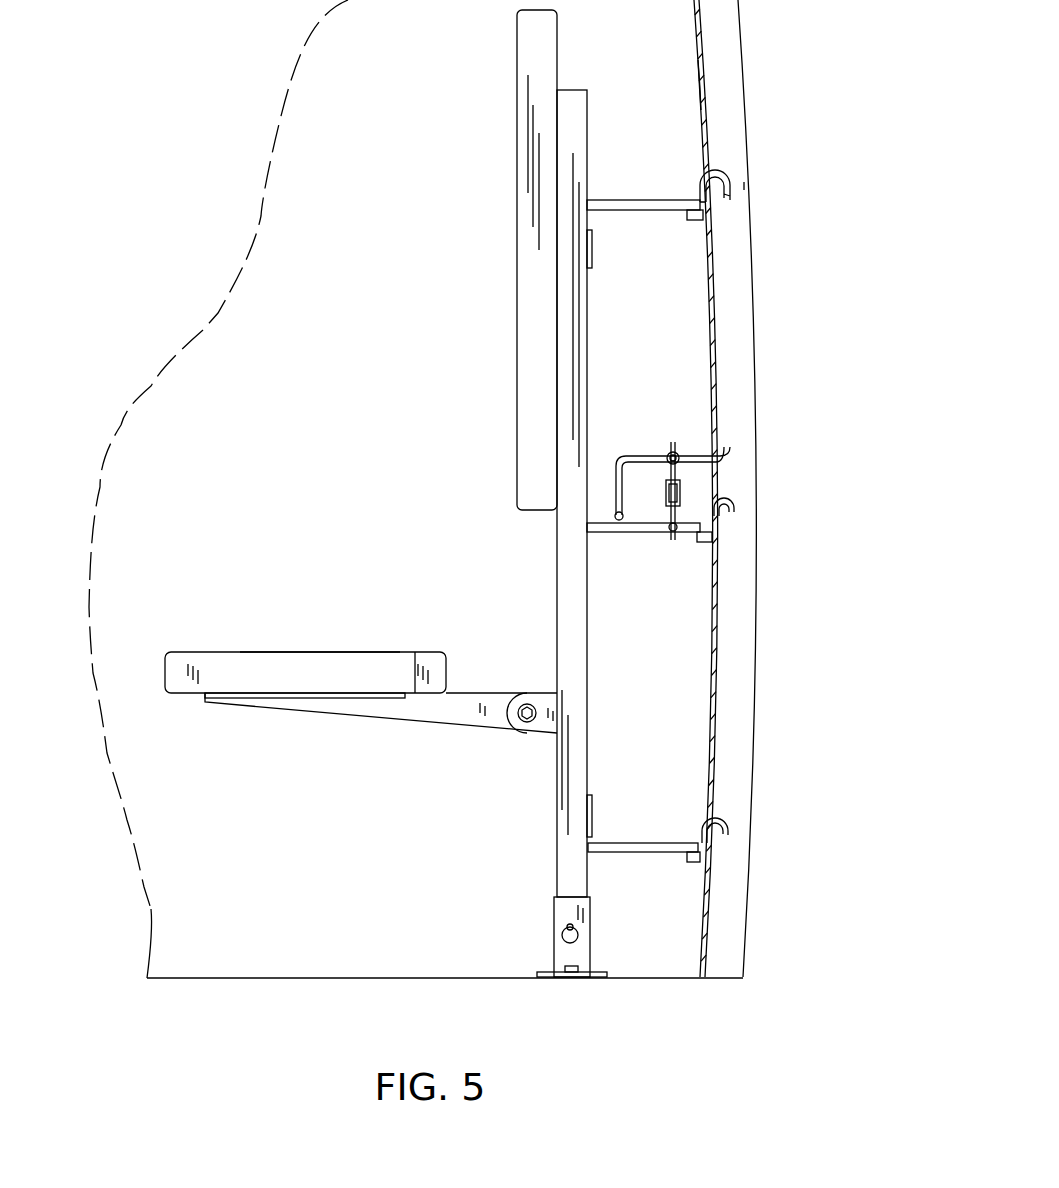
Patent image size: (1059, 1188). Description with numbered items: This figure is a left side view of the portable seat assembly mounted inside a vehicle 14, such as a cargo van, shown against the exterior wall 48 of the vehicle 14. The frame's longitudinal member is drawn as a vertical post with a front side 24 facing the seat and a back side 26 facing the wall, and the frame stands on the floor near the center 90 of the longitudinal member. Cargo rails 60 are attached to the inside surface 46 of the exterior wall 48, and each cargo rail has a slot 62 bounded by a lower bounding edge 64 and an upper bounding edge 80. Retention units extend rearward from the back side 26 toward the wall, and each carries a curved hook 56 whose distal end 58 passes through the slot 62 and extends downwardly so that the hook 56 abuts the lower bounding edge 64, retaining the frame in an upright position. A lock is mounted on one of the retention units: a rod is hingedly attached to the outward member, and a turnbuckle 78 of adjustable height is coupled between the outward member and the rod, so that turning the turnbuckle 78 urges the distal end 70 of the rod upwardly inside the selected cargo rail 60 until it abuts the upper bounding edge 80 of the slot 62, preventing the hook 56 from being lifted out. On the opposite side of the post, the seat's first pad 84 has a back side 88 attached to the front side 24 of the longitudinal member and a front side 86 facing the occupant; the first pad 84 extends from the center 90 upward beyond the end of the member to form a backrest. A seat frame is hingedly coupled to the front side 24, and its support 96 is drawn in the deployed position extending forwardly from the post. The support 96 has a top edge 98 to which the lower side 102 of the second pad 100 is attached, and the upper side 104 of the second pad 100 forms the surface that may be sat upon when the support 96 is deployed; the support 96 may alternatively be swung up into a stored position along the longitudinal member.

The vehicle 14 is at (744, 68).
The front side 24 is at (557, 785).
The back side 26 is at (588, 860).
The inside surface 46 is at (695, 22).
The exterior wall 48 is at (753, 185).
The hooks 56 is at (722, 175).
The distal end 58 is at (729, 198).
The cargo rails 60 is at (699, 84).
The slot 62 is at (690, 142).
The lower bounding edge 64 is at (702, 176).
The distal end 70 is at (732, 453).
The turnbuckles 78 is at (662, 500).
The upper bounding edge 80 is at (698, 460).
The first pad 84 is at (517, 130).
The front side 86 is at (517, 215).
The back side 88 is at (557, 272).
The center 90 is at (541, 537).
The supports 96 is at (400, 720).
The top edge 98 is at (404, 652).
The second pad 100 is at (232, 650).
The lower side 102 is at (307, 698).
The upper side 104 is at (304, 652).